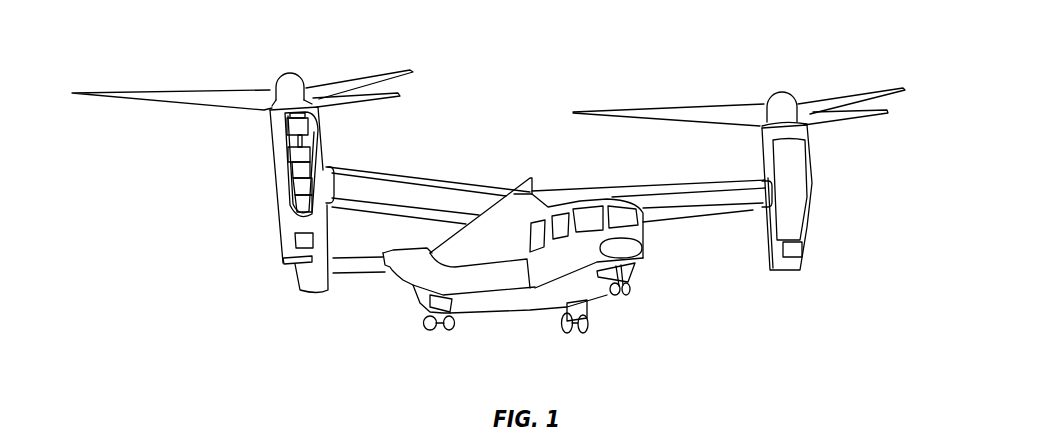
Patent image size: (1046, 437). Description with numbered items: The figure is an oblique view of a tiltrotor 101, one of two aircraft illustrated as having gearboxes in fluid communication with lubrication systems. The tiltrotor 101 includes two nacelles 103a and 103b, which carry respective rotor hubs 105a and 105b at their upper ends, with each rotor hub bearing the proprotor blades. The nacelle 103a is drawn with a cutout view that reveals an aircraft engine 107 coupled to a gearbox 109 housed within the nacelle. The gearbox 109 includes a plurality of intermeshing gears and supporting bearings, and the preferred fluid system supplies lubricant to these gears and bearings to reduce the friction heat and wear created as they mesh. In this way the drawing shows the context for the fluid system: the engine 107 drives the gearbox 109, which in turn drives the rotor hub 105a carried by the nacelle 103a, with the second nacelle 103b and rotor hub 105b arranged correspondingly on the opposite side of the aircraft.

The tiltrotor 101 is at (552, 62).
The nacelle 103a is at (273, 203).
The nacelle 103b is at (811, 205).
The rotor hub 105a is at (280, 72).
The rotor hub 105b is at (768, 93).
The aircraft engine 107 is at (308, 170).
The gearbox 109 is at (320, 133).